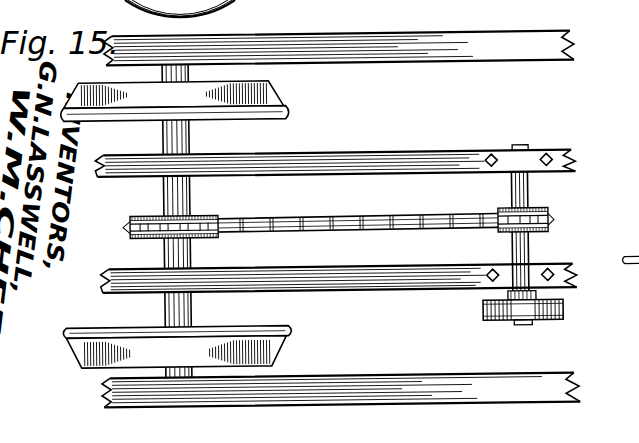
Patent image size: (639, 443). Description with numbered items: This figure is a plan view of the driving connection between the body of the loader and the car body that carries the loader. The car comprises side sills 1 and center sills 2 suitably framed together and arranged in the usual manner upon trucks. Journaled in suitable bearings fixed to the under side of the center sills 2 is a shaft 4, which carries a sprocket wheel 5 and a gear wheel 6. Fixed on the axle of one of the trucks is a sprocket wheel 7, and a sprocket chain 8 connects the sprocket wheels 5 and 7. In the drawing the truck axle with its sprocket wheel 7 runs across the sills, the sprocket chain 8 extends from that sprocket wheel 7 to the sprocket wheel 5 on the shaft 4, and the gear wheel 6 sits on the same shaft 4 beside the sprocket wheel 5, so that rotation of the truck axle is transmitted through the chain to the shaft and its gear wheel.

The side sills 1 is at (412, 53).
The center sills 2 is at (448, 142).
The shaft 4 is at (527, 247).
The sprocket wheel 5 is at (553, 219).
The gear wheel 6 is at (563, 308).
The sprocket wheel 7 is at (137, 214).
The sprocket chain 8 is at (367, 214).